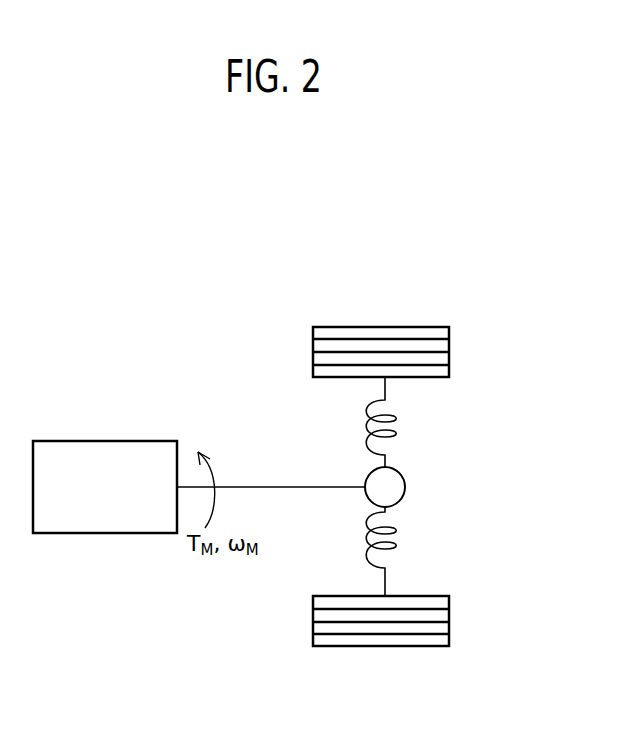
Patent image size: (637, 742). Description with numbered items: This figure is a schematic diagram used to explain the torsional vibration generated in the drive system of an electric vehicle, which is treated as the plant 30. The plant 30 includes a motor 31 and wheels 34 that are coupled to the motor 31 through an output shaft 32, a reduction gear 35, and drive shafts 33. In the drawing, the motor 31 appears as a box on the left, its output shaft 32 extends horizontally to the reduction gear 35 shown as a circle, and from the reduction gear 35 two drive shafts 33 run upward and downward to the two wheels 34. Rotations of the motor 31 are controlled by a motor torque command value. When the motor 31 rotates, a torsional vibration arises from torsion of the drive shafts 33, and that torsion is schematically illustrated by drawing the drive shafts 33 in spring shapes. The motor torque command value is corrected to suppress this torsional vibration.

The plant 30 is at (212, 365).
The motor 31 is at (80, 440).
The output shaft 32 is at (268, 485).
The drive shafts 33 is at (388, 397).
The wheels 34 is at (388, 325).
The reduction gear 35 is at (407, 487).